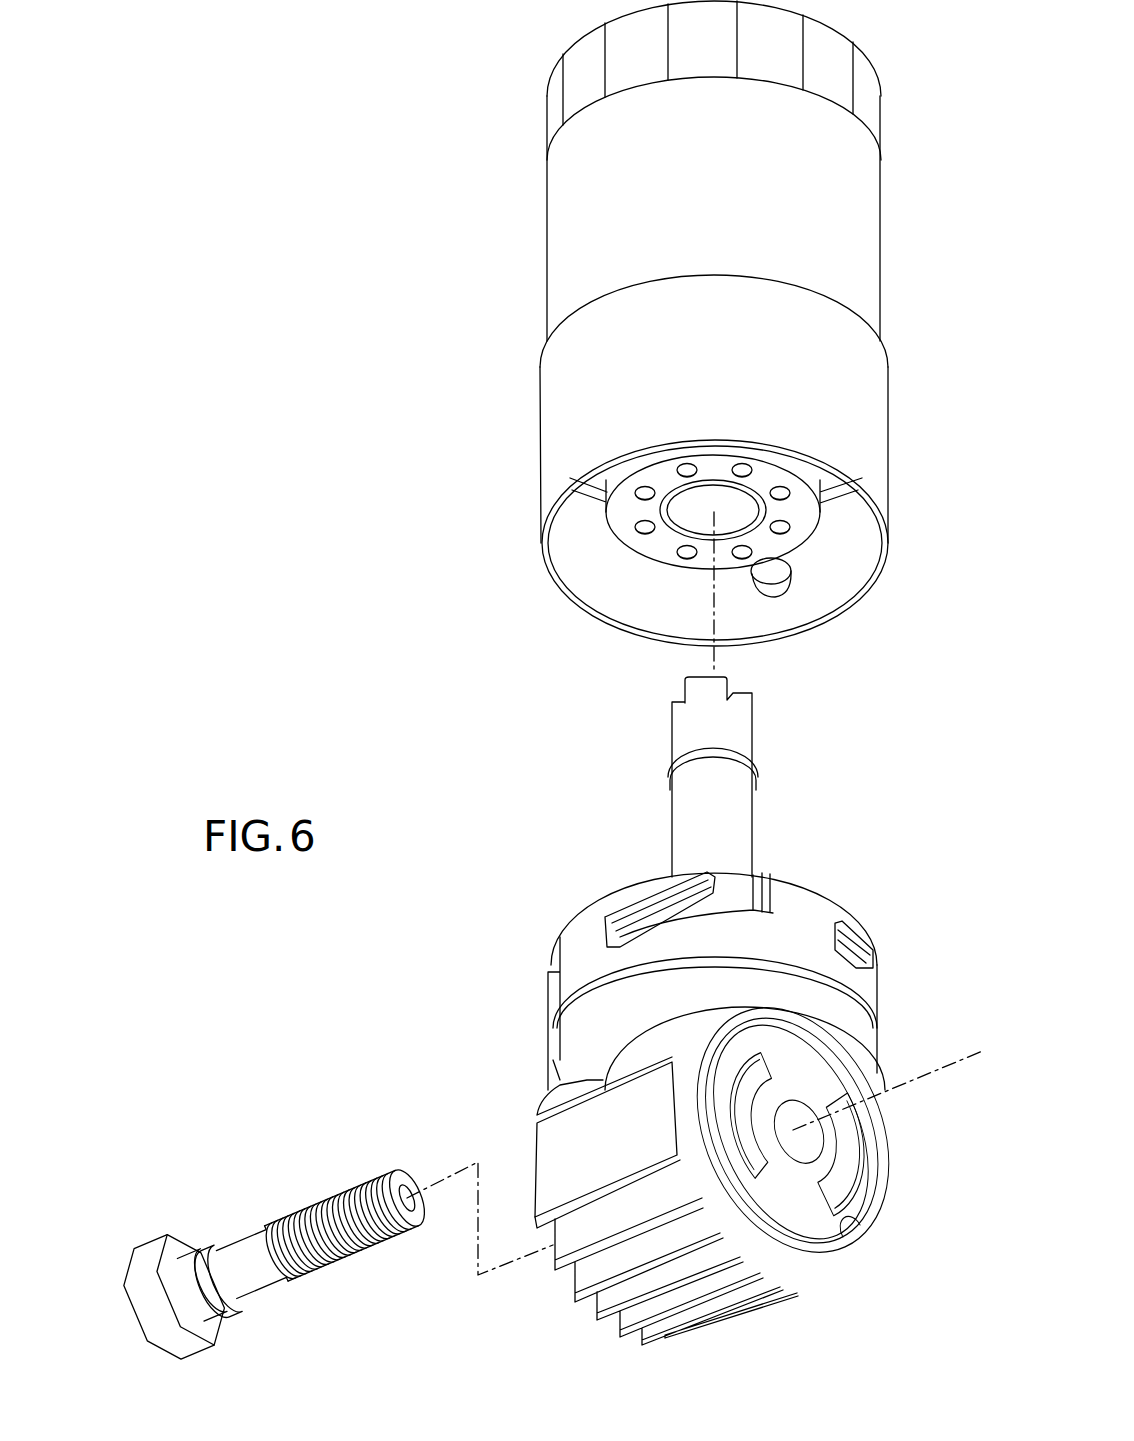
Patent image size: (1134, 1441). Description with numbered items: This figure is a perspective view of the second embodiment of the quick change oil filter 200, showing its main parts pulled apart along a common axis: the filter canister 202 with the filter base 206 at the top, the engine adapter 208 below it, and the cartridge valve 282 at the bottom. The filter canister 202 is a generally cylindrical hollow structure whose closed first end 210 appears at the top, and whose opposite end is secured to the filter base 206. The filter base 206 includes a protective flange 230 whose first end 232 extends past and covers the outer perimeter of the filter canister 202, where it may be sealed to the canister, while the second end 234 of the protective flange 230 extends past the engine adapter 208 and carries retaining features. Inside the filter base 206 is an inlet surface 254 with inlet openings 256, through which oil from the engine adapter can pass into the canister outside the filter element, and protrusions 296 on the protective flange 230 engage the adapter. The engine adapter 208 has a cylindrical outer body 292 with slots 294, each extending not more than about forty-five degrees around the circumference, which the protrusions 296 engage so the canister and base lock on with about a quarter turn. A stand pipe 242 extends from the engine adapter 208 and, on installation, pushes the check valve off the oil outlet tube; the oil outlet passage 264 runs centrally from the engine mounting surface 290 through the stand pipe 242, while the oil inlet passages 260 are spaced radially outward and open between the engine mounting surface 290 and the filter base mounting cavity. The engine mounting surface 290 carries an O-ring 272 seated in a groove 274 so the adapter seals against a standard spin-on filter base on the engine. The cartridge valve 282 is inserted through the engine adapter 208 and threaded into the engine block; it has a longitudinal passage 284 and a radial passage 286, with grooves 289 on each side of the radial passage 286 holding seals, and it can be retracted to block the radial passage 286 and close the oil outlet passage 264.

The quick change oil filter 200 is at (968, 606).
The filter canister 202 is at (527, 218).
The filter base 206 is at (500, 427).
The engine adapter 208 is at (500, 1024).
The first end 210 is at (600, 30).
The protective flange 230 is at (560, 457).
The first end 232 is at (568, 318).
The second end 234 is at (557, 583).
The stand pipe 242 is at (707, 735).
The inlet surface 254 is at (770, 481).
The inlet openings 256 is at (745, 466).
The oil inlet passages 260 is at (850, 1160).
The oil outlet passage 264 is at (800, 1132).
The O-ring 272 is at (872, 1176).
The groove 274 is at (862, 1238).
The cartridge valve 282 is at (242, 1243).
The longitudinal passage 284 is at (403, 1192).
The radial passage 286 is at (270, 1232).
The grooves 289 is at (315, 1192).
The engine mounting surface 290 is at (853, 1213).
The cylindrical outer body 292 is at (583, 940).
The slots 294 is at (653, 923).
The protrusions 296 is at (773, 577).